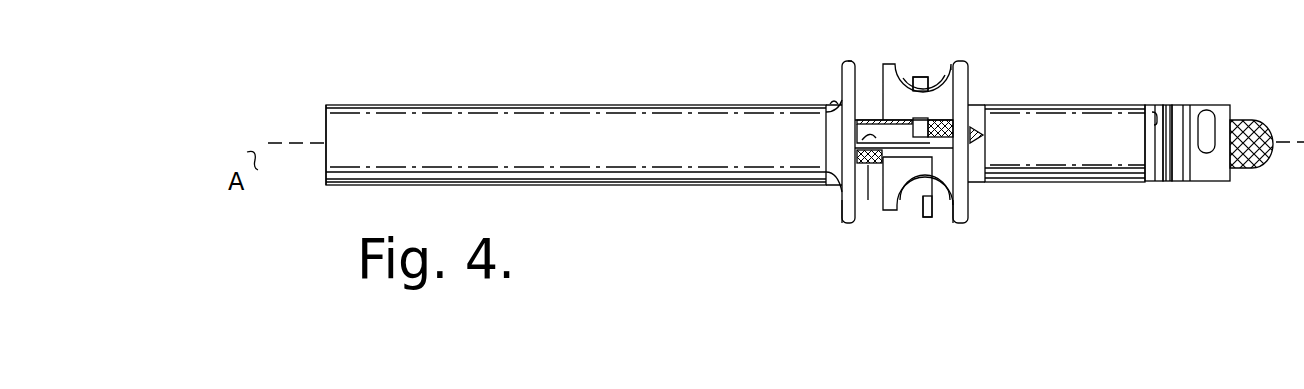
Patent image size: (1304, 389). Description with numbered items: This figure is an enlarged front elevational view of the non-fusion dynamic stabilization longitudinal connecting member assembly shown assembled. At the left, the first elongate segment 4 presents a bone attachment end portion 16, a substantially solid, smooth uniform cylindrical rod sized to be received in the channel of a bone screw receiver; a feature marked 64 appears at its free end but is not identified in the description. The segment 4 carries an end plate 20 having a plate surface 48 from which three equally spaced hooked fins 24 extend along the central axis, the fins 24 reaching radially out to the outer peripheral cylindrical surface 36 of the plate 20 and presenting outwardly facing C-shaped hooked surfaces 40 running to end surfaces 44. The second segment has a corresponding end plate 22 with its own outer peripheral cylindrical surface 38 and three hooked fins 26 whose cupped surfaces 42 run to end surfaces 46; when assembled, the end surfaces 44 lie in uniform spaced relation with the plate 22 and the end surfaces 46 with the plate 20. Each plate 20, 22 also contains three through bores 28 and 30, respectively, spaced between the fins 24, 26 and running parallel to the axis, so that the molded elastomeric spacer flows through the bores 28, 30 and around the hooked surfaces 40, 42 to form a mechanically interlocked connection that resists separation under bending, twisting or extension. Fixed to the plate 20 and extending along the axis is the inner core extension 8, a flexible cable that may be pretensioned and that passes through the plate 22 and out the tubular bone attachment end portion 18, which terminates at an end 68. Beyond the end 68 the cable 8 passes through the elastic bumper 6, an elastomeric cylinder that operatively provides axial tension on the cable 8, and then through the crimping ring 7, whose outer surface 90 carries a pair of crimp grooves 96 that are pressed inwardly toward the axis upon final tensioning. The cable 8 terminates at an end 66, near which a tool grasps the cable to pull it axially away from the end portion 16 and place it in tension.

The first elongate segment 4 is at (806, 194).
The elastic bumper 6 is at (1161, 183).
The crimping ring 7 is at (1218, 183).
The inner core extension 8 is at (972, 115).
The bone attachment end portion 16 is at (667, 185).
The bone attachment end portion 18 is at (1049, 184).
The end plate 20 is at (846, 61).
The end plate 22 is at (960, 61).
The hooked fin members 24 is at (920, 77).
The hooked fin members 26 is at (884, 64).
The through bores 28 is at (838, 170).
The through bores 30 is at (978, 138).
The outer peripheral cylindrical surface 36 is at (848, 225).
The outer peripheral cylindrical surface 38 is at (961, 224).
The hooked cupped surface 40 is at (841, 192).
The hooked cupped surface 42 is at (968, 196).
The fin end surfaces 44 is at (930, 86).
The fin end surfaces 46 is at (838, 102).
The plate surface 48 is at (858, 61).
The tube end 64 is at (326, 183).
The core cable end 66 is at (1262, 158).
The tubular end portion end 68 is at (1151, 108).
The outer surface of crimping ring 90 is at (1192, 183).
The crimp grooves 96 is at (1205, 112).